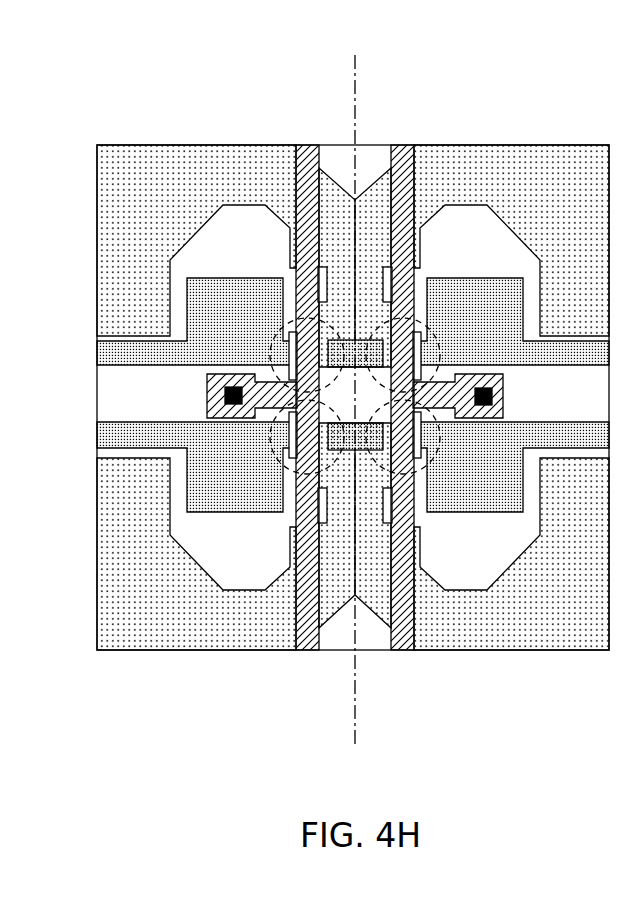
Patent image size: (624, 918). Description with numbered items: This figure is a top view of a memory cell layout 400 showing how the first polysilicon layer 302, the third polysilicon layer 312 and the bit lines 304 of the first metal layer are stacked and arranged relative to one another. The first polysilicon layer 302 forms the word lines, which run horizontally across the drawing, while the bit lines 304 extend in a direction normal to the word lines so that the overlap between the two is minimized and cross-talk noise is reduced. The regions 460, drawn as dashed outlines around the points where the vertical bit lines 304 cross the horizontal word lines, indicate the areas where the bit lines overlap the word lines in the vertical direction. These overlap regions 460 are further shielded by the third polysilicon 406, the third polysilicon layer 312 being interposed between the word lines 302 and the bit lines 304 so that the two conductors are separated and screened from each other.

The memory cell layout 400 is at (222, 144).
The Poly-3 layer 312 is at (510, 686).
The Poly-1 layer 302 is at (62, 463).
The bit lines 304 is at (437, 113).
The Poly-3 406 is at (254, 403).
The overlap regions 460 is at (275, 352).